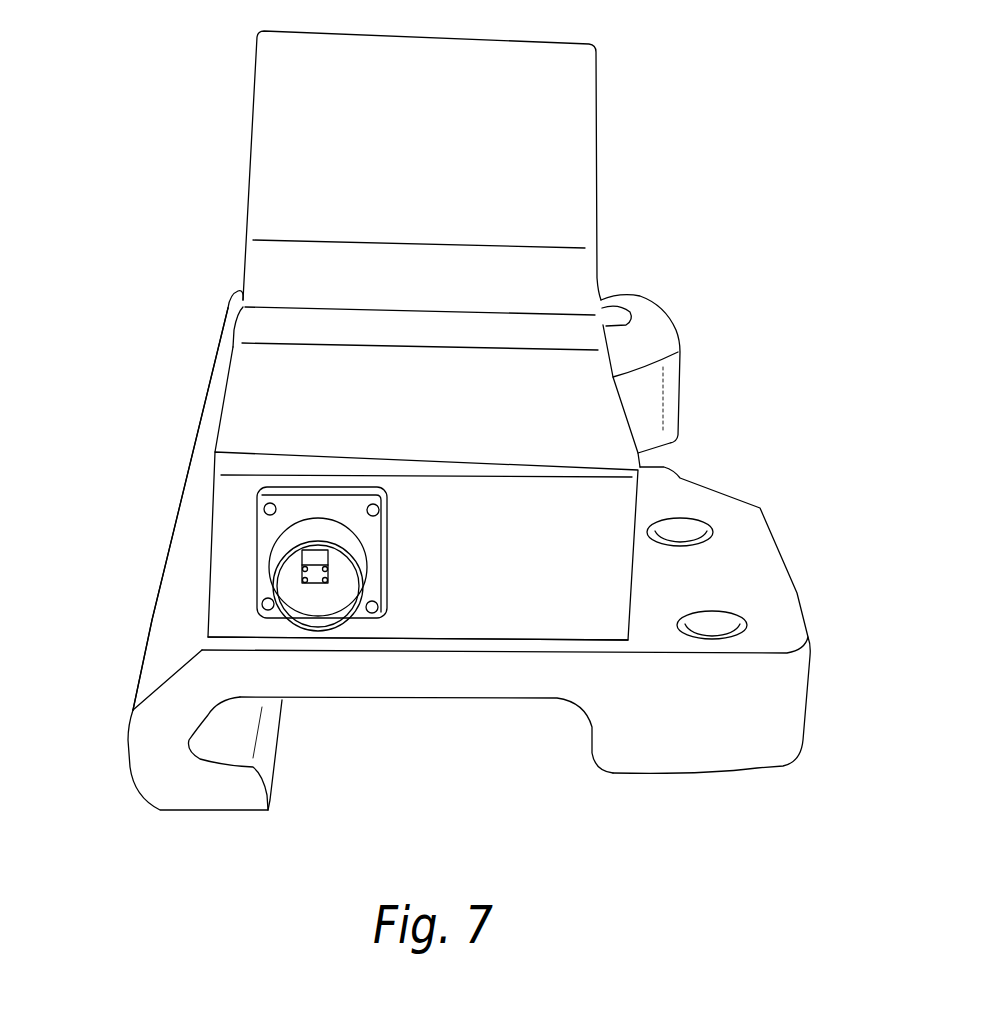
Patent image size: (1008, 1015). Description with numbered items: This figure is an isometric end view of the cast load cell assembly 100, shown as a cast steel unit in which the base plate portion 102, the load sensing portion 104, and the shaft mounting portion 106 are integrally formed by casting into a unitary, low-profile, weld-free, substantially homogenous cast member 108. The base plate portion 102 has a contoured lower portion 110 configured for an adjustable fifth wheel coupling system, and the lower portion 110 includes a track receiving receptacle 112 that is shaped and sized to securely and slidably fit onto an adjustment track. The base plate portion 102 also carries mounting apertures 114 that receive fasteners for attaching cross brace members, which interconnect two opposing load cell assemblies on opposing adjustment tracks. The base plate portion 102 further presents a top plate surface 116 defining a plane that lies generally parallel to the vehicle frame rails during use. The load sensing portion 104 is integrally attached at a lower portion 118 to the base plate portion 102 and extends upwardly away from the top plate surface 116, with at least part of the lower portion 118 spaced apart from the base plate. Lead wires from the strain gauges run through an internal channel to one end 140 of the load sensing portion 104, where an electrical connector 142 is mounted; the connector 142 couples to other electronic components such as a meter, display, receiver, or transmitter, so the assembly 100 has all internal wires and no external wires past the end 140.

The cast load cell assembly 100 is at (130, 157).
The base plate portion 102 is at (202, 492).
The load sensing portion 104 is at (235, 387).
The shaft mounting portion 106 is at (260, 162).
The cast member 108 is at (225, 290).
The contoured lower portion 110 is at (167, 775).
The track receiving receptacle 112 is at (410, 749).
The mounting apertures 114 is at (702, 538).
The top plate surface 116 is at (773, 608).
The lower portion 118 is at (531, 618).
The end 140 is at (435, 603).
The electrical connector 142 is at (333, 607).